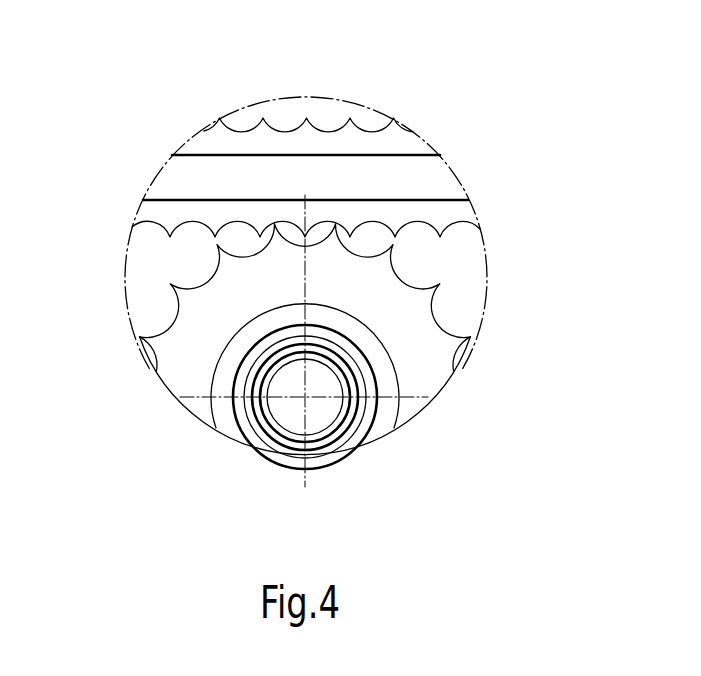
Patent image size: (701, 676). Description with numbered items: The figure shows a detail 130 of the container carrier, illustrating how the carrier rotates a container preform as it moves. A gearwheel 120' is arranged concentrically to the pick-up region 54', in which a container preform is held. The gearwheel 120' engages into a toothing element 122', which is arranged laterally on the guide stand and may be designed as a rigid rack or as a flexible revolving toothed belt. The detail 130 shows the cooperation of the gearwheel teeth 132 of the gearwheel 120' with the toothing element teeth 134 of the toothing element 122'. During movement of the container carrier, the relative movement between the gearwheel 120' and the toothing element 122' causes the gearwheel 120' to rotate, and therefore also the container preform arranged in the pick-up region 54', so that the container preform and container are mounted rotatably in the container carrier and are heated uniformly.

The detail 130 is at (138, 400).
The toothing element 122' is at (368, 144).
The gearwheel teeth 132 is at (335, 245).
The toothing element teeth 134 is at (305, 228).
The gearwheel 120' is at (340, 390).
The pick-up region 54' is at (304, 452).